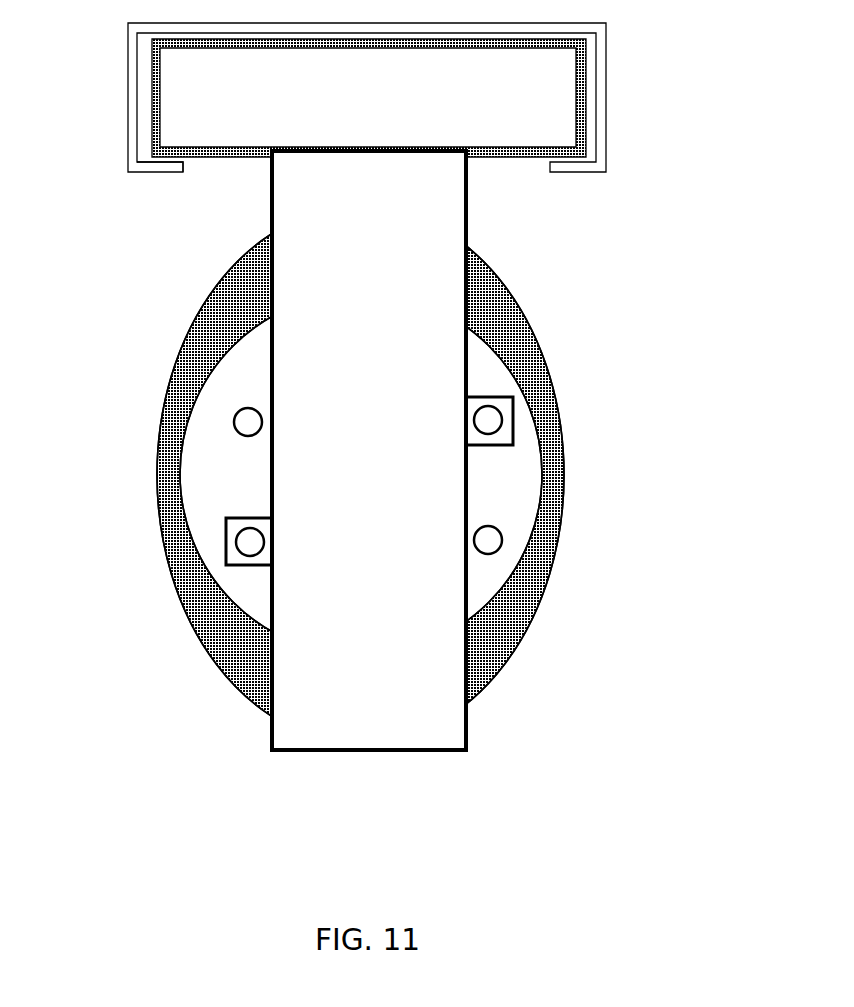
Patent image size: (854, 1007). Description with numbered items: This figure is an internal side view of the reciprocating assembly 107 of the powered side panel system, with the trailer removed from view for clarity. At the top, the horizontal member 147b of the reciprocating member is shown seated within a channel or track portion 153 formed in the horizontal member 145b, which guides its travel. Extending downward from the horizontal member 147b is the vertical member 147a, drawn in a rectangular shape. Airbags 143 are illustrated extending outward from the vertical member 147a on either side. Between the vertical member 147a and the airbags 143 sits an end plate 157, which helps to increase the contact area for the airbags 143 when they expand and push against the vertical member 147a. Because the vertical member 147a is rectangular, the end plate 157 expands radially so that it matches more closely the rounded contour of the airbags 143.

The assembly 107 is at (118, 676).
The airbags 143 is at (548, 580).
The end plate 157 is at (240, 481).
The horizontal member 145b is at (608, 98).
The horizontal member 147b is at (408, 97).
The channel or track portion 153 is at (200, 175).
The vertical member 147a is at (400, 481).